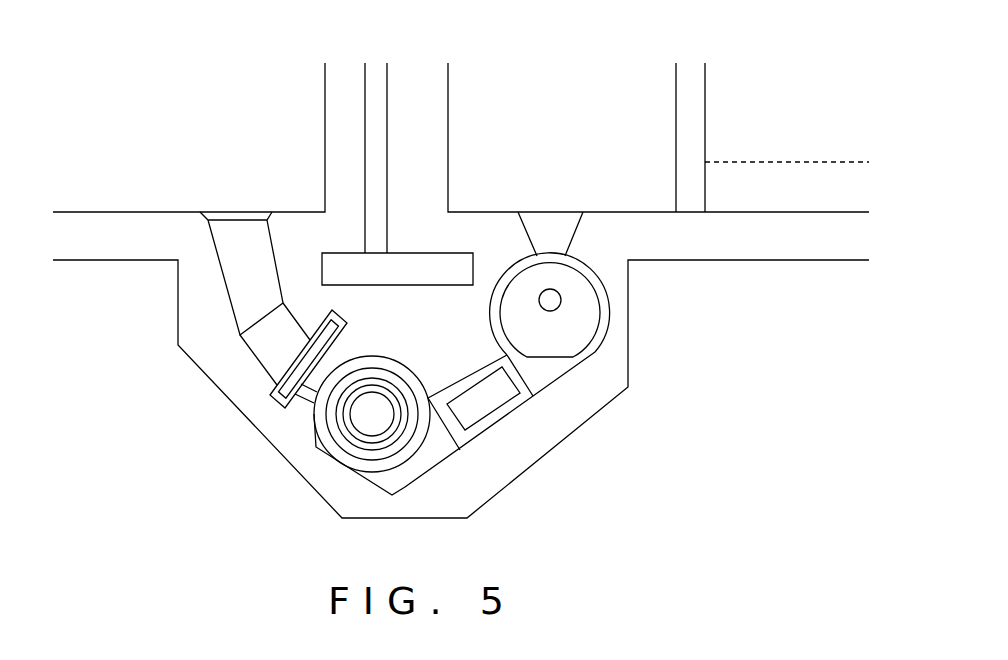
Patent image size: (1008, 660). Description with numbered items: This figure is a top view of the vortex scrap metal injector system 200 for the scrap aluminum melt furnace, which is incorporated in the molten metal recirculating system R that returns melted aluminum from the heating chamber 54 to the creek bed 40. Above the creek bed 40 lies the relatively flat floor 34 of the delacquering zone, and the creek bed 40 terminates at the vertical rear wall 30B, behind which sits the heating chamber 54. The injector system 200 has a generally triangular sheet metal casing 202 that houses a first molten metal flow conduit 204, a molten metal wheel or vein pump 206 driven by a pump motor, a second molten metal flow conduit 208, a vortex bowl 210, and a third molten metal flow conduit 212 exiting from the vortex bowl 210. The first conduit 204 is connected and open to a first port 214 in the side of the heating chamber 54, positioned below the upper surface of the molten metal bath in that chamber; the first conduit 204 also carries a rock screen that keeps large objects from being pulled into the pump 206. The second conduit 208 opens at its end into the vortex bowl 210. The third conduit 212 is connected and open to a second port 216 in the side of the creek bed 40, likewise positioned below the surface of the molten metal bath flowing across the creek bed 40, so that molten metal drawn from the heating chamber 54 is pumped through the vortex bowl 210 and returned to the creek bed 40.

The heating chamber 54 is at (127, 153).
The vertical rear wall 30B is at (448, 85).
The creek bed 40 is at (538, 120).
The floor 34 is at (815, 117).
The sheet metal casing 202 is at (178, 306).
The first molten metal flow conduit 204 is at (228, 303).
The vortex scrap metal injector system 200 is at (174, 422).
The first port 214 is at (240, 212).
The molten metal wheel or vein pump 206 is at (317, 453).
The vortex bowl 210 is at (582, 357).
The second molten metal flow conduit 208 is at (490, 432).
The third molten metal flow conduit 212 is at (588, 270).
The second port 216 is at (548, 212).
The molten metal recirculating system R is at (660, 340).